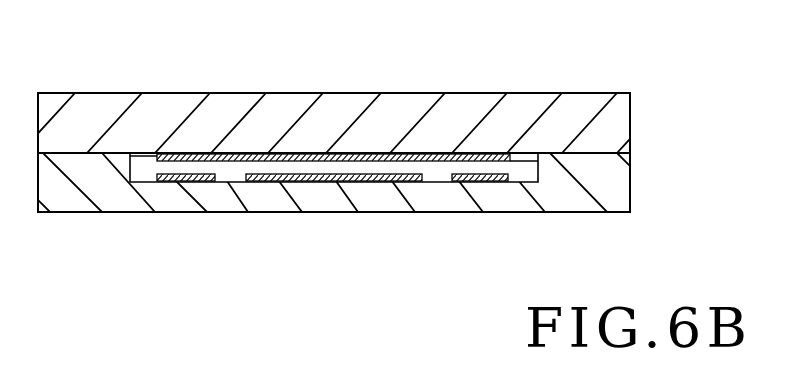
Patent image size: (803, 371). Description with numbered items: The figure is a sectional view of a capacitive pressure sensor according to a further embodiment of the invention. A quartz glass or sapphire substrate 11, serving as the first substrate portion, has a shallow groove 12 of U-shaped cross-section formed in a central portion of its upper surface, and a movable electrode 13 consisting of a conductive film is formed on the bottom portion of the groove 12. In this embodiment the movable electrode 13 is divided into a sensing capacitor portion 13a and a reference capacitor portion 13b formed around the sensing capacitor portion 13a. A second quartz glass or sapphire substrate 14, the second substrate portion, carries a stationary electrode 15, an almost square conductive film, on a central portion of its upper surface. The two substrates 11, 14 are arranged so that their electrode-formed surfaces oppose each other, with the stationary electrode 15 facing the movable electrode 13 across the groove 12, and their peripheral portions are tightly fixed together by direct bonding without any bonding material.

The quartz glass or sapphire substrate 11 is at (600, 182).
The shallow groove 12 is at (523, 165).
The movable electrode 13 is at (334, 242).
The sensing capacitor portion 13a is at (378, 182).
The reference capacitor portion 13b is at (480, 219).
The quartz glass or sapphire substrate 14 is at (587, 115).
The stationary electrode 15 is at (279, 153).